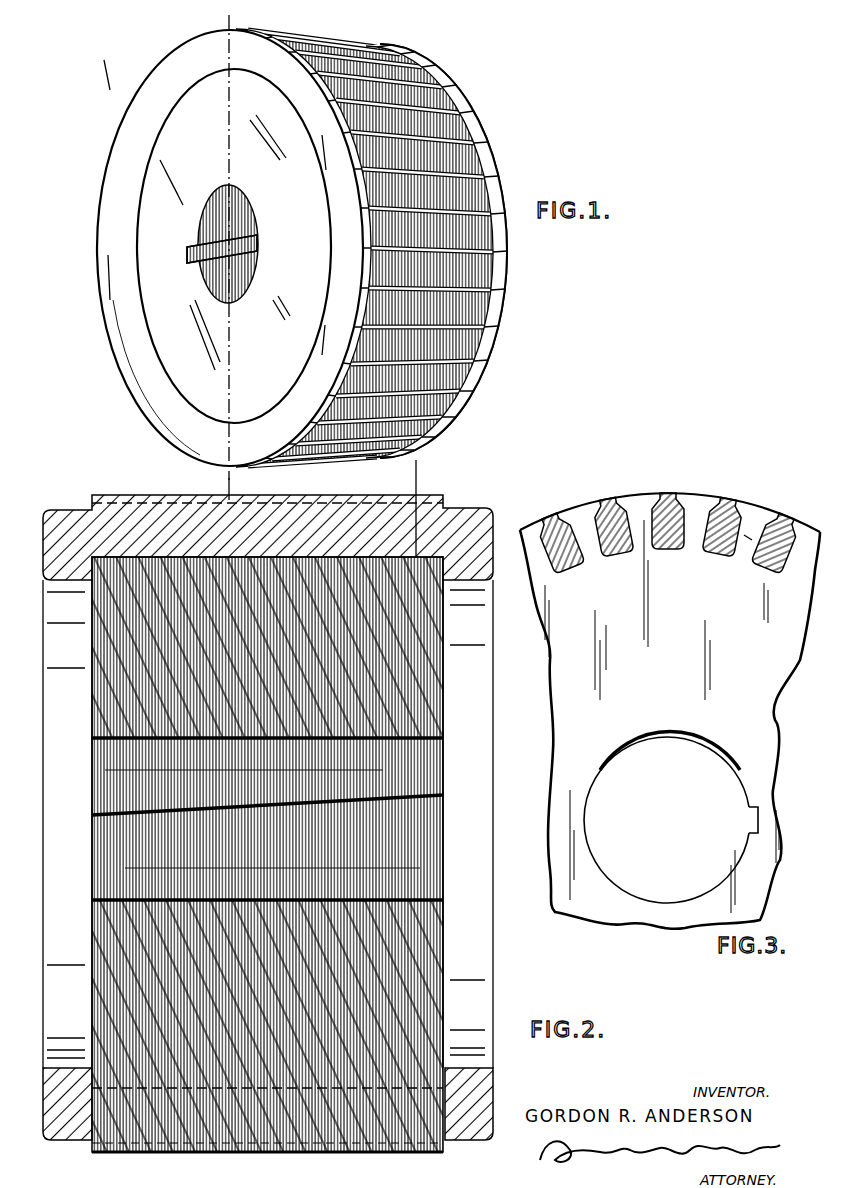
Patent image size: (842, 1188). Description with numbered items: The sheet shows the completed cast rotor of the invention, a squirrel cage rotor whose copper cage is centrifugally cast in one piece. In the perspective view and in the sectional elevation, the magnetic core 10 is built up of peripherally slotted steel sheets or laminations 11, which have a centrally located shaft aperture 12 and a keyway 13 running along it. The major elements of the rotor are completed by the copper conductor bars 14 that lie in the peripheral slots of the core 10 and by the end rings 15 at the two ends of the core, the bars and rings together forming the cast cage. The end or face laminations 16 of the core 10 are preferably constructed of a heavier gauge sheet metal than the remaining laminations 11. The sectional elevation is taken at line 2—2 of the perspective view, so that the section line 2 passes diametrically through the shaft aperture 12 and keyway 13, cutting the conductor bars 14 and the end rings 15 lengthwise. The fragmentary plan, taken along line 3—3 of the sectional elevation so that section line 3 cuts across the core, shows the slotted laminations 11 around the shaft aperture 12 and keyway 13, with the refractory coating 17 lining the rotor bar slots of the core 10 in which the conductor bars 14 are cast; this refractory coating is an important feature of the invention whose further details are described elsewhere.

In FIG. 1, the section line 2— 2 is at (232, 473).
In FIG. 2, the section line 2— 2 is at (232, 483).
In FIG. 2, the section line 3— 3 is at (418, 468).
In FIG. 1, the magnetic core 10 is at (470, 248).
In FIG. 2, the magnetic core 10 is at (268, 1152).
In FIG. 1, the laminations 11 is at (468, 300).
In FIG. 2, the laminations 11 is at (410, 688).
In FIG. 3, the laminations 11 is at (634, 502).
In FIG. 1, the shaft aperture 12 is at (250, 275).
In FIG. 2, the shaft aperture 12 is at (93, 745).
In FIG. 3, the shaft aperture 12 is at (706, 756).
In FIG. 1, the keyway 13 is at (188, 253).
In FIG. 2, the keyway 13 is at (94, 816).
In FIG. 3, the keyway 13 is at (752, 808).
In FIG. 1, the copper conductor bars 14 is at (460, 145).
In FIG. 2, the copper conductor bars 14 is at (144, 522).
In FIG. 3, the copper conductor bars 14 is at (723, 536).
In FIG. 1, the end rings 15 is at (134, 105).
In FIG. 2, the end rings 15 is at (62, 1088).
In FIG. 1, the end or face laminations 16 is at (254, 360).
In FIG. 2, the end or face laminations 16 is at (94, 978).
In FIG. 3, the refractory coating 17 is at (748, 540).